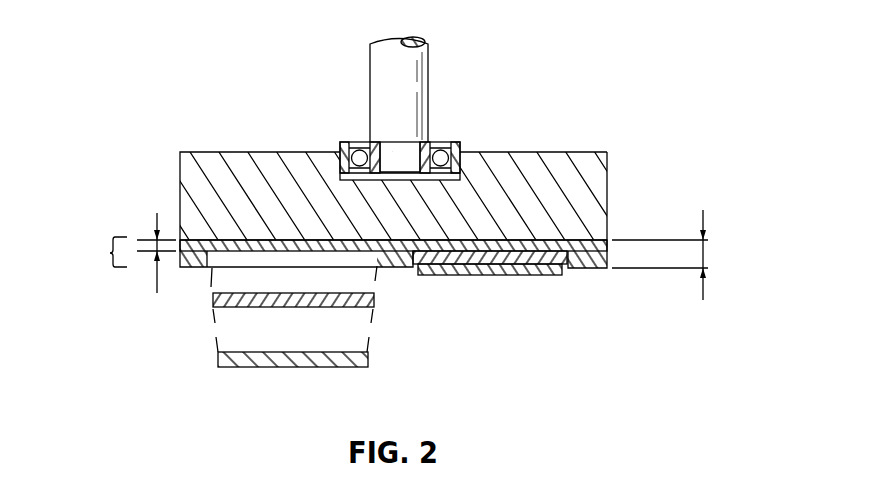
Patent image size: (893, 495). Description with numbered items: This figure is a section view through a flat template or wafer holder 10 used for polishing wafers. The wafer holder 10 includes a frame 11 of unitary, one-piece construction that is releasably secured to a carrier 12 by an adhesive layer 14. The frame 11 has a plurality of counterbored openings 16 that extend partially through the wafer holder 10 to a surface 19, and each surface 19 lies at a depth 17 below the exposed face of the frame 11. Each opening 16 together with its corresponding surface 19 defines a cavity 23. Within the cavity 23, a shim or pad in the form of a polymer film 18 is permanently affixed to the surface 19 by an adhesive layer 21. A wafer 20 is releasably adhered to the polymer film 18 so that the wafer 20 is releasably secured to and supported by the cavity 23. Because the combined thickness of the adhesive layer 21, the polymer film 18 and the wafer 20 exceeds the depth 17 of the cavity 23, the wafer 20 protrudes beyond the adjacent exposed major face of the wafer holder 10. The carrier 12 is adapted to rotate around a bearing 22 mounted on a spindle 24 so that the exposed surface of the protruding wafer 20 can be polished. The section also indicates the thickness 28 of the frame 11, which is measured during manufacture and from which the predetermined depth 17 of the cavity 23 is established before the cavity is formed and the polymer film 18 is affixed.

The wafer holder 10 is at (110, 253).
The frame 11 is at (610, 248).
The carrier 12 is at (598, 183).
The adhesive layer 14 is at (535, 262).
The openings 16 is at (226, 243).
The depth 17 is at (156, 253).
The polymer film 18 is at (375, 300).
The surface 19 is at (268, 250).
The wafer 20 is at (217, 357).
The adhesive layer 21 is at (350, 292).
The bearing 22 is at (448, 147).
The cavity 23 is at (292, 257).
The spindle 24 is at (412, 71).
The thickness 28 is at (704, 254).